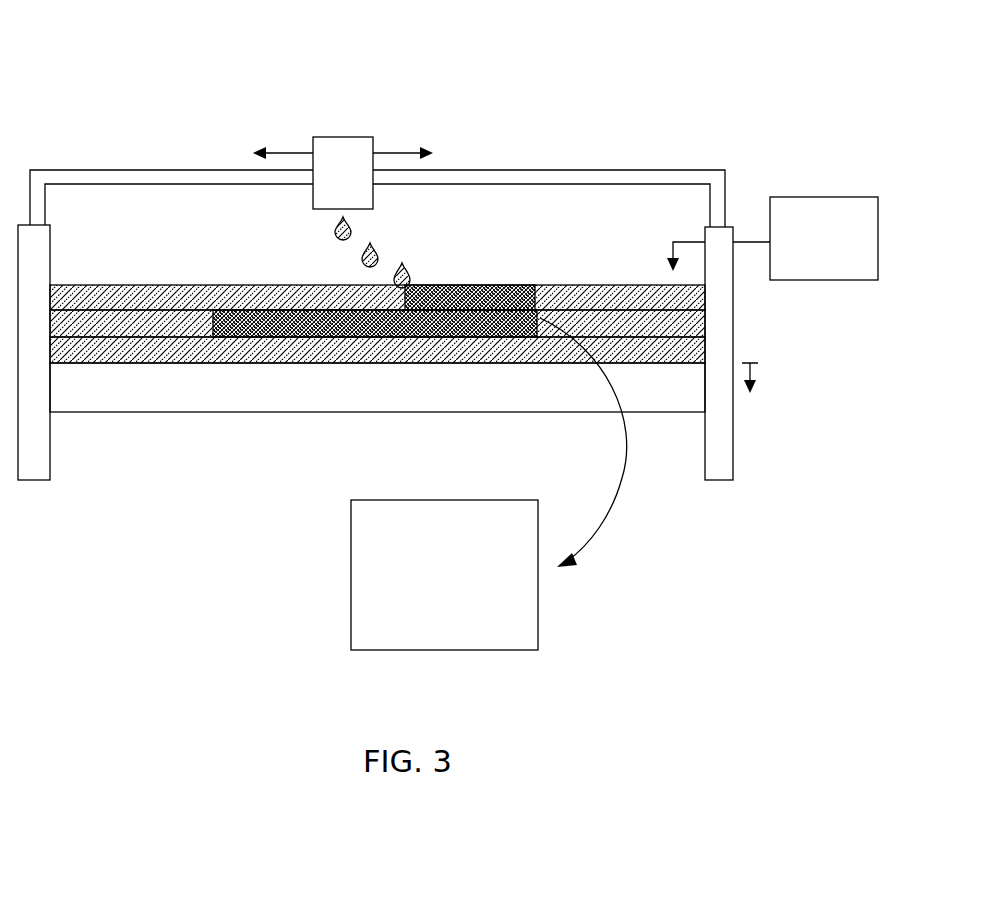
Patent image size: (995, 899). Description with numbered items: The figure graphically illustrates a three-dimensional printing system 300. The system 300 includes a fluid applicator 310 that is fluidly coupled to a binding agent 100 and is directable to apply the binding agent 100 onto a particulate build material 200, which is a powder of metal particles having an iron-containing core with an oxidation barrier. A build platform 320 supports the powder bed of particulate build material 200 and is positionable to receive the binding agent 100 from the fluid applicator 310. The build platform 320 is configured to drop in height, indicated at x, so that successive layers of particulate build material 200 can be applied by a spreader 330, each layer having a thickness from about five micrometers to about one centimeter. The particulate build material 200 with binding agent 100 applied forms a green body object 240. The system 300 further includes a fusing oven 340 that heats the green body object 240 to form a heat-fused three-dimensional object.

The three-dimensional printing system 300 is at (158, 64).
The fluid applicator 310 is at (363, 187).
The binding agent 100 is at (334, 231).
The particulate build material 200 is at (117, 320).
The green body object 240 is at (332, 363).
The build platform 320 is at (515, 400).
The spreader 330 is at (844, 252).
The fusing oven 340 is at (464, 587).